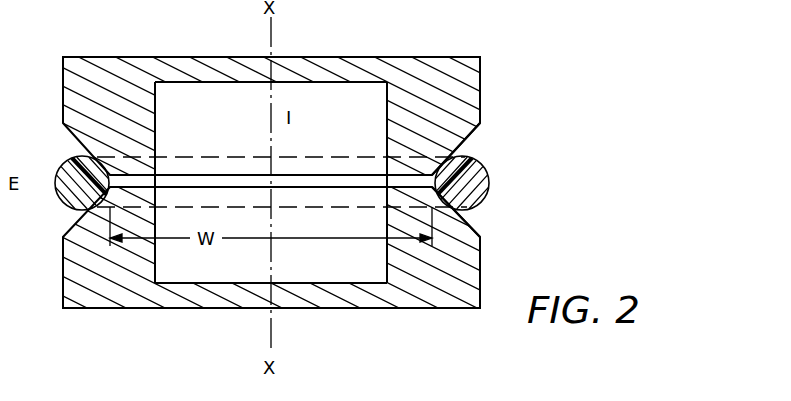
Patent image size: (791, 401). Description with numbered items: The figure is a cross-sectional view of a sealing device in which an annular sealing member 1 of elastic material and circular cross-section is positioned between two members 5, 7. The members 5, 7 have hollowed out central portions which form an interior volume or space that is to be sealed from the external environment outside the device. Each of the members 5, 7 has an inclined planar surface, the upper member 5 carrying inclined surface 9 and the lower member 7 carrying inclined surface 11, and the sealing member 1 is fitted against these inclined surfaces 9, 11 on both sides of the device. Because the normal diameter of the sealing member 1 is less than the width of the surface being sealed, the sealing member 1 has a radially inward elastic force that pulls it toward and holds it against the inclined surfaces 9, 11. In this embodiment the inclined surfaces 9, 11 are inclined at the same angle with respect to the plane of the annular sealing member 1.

The annular sealing member 1 is at (485, 168).
The member 5 is at (432, 56).
The member 7 is at (452, 309).
The inclined planar surface 9 is at (467, 140).
The inclined planar surface 11 is at (468, 222).